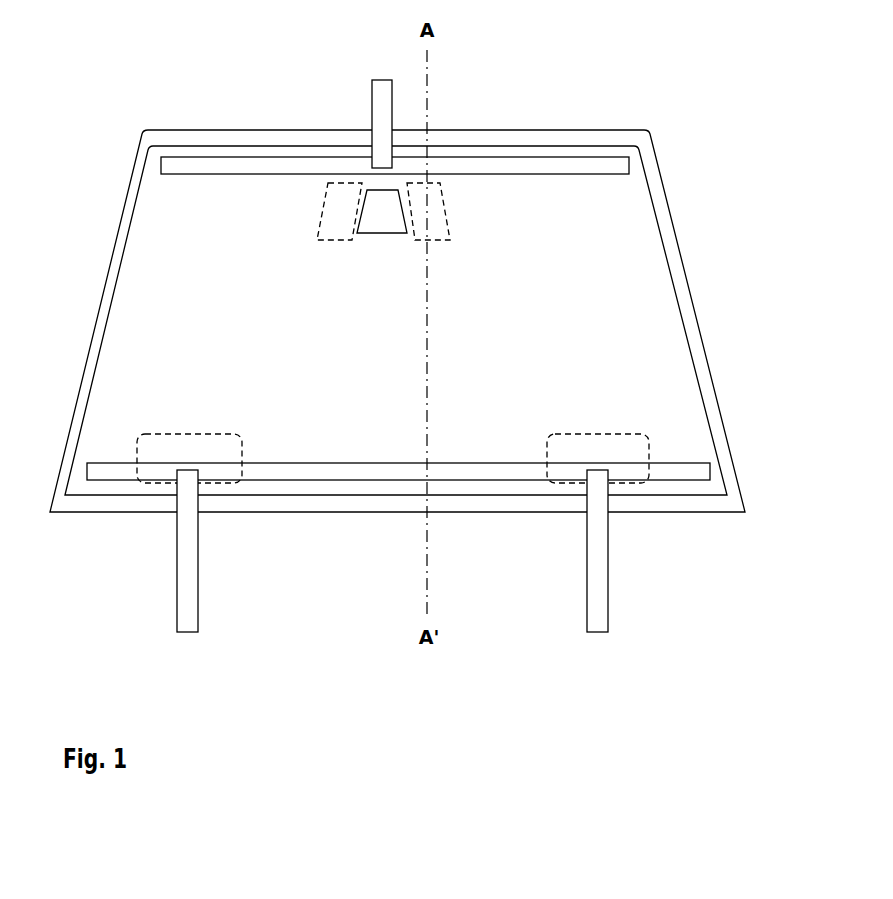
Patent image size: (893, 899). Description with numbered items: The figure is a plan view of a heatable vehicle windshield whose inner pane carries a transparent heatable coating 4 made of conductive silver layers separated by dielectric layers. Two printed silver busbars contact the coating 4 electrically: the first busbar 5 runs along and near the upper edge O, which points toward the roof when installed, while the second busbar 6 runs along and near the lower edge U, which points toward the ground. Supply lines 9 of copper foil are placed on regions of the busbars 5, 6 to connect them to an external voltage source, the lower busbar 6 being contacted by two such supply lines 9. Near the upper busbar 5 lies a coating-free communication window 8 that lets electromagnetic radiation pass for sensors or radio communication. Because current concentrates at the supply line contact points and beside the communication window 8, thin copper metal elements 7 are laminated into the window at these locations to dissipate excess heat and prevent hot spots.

The heatable coating 4 is at (648, 260).
The first busbar 5 is at (547, 165).
The second busbar 6 is at (695, 477).
The metal element 7 is at (328, 210).
The communication window 8 is at (382, 207).
The supply line 9 is at (382, 105).
The upper edge O is at (192, 126).
The lower edge U is at (312, 518).